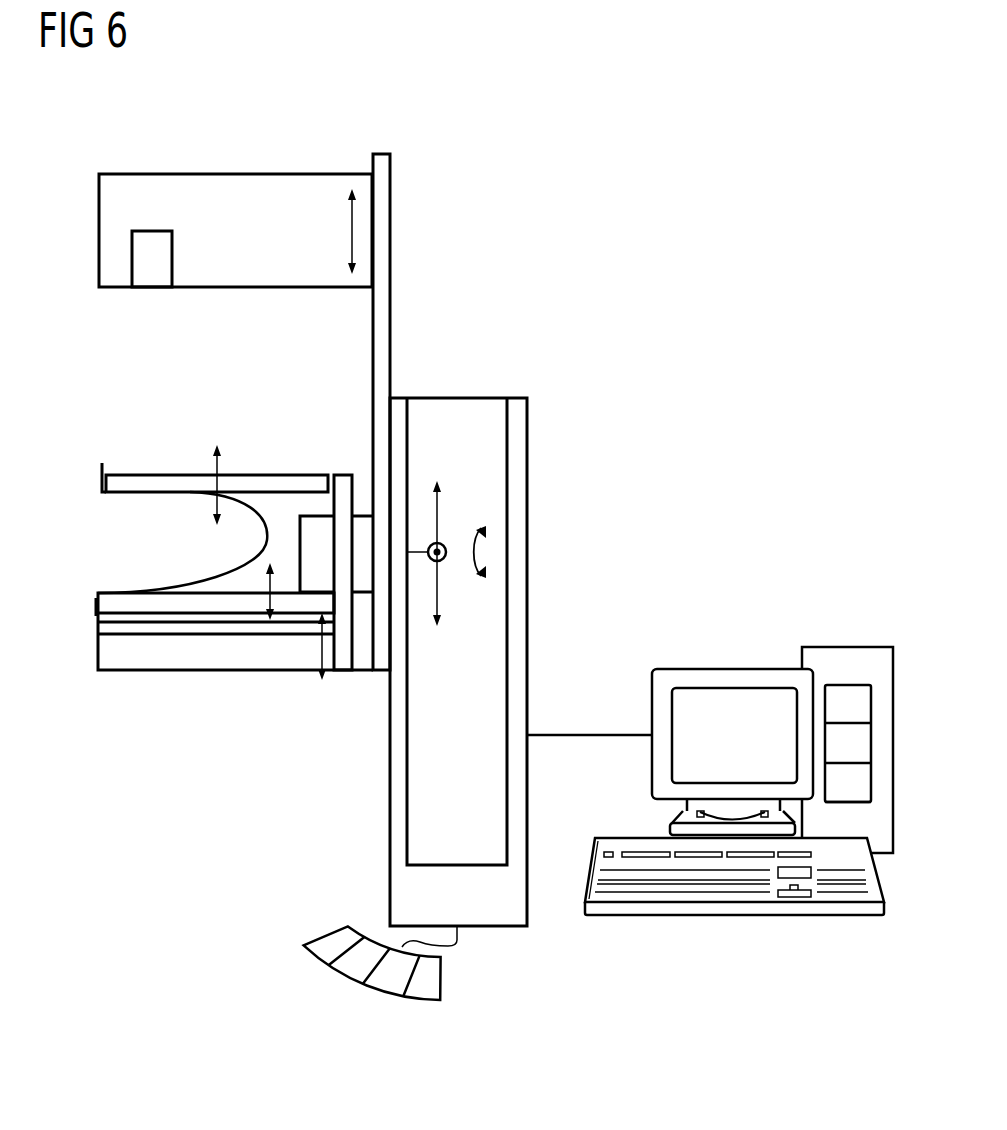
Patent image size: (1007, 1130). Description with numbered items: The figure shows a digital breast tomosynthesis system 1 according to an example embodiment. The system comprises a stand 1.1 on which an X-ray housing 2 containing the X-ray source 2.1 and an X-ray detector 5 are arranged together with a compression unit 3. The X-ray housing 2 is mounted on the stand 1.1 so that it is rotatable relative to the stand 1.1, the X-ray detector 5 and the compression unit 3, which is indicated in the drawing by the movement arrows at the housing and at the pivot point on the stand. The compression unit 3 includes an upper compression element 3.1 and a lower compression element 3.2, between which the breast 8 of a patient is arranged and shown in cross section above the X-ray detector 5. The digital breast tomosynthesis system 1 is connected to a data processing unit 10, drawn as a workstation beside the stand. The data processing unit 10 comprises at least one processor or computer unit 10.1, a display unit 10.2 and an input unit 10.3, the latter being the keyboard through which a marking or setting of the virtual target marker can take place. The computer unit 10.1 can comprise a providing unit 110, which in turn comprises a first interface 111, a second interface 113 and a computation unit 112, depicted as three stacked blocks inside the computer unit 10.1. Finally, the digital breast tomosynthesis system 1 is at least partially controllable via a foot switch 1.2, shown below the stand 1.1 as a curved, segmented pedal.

The digital breast tomosynthesis system 1 is at (458, 118).
The stand 1.1 is at (515, 470).
The foot switch 1.2 is at (420, 988).
The X-ray housing 2 is at (243, 172).
The X-ray source 2.1 is at (137, 254).
The compression unit 3 is at (238, 481).
The upper compression element 3.1 is at (122, 473).
The lower compression element 3.2 is at (107, 603).
The X-ray detector 5 is at (205, 658).
The breast 8 is at (173, 537).
The data processing unit 10 is at (762, 547).
The computer unit 10.1 is at (818, 658).
The display unit 10.2 is at (733, 678).
The input unit 10.3 is at (735, 895).
The providing unit 110 is at (855, 683).
The first interface 111 is at (863, 707).
The computation unit 112 is at (863, 784).
The second interface 113 is at (863, 746).